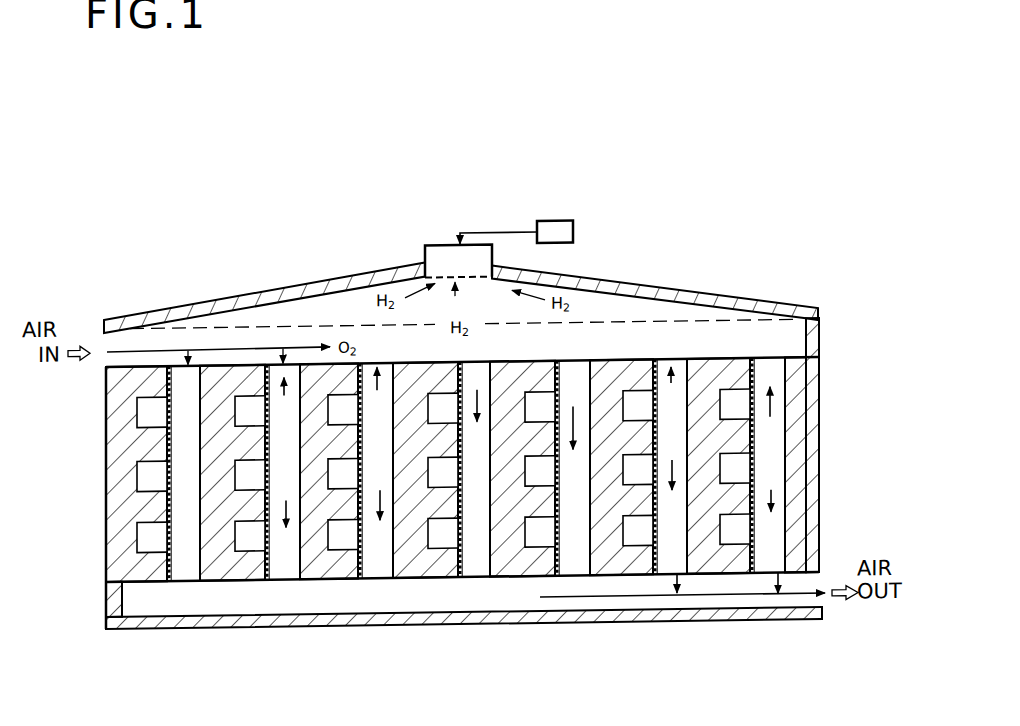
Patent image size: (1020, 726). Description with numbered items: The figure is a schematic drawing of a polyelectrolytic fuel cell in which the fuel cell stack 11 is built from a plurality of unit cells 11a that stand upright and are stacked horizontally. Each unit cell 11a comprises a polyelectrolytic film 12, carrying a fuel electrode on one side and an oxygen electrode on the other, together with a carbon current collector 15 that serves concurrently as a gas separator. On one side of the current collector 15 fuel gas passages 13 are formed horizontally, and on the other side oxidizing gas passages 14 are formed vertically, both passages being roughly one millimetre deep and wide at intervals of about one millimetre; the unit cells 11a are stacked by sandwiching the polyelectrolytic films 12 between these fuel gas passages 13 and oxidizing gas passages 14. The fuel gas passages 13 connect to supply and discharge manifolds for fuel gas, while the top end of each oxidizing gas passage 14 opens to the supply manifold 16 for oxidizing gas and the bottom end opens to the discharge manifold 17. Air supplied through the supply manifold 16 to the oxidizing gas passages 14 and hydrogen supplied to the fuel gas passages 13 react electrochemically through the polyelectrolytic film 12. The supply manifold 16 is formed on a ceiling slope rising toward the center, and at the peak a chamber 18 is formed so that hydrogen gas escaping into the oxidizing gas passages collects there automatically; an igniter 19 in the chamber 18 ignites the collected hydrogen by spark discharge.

The fuel cell stack 11 is at (483, 218).
The unit cell 11a is at (642, 366).
The polyelectrolytic film 12 is at (180, 562).
The fuel gas passage 13 is at (153, 537).
The oxidizing gas passage 14 is at (193, 562).
The carbon current collector 15 is at (128, 563).
The supply manifold for oxidizing gas 16 is at (225, 335).
The discharge manifold for oxidizing gas 17 is at (503, 609).
The chamber 18 is at (446, 256).
The igniter 19 is at (573, 240).